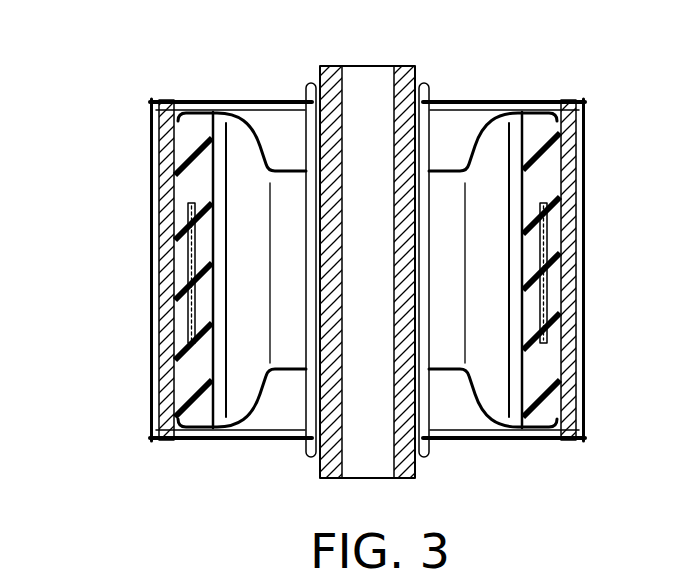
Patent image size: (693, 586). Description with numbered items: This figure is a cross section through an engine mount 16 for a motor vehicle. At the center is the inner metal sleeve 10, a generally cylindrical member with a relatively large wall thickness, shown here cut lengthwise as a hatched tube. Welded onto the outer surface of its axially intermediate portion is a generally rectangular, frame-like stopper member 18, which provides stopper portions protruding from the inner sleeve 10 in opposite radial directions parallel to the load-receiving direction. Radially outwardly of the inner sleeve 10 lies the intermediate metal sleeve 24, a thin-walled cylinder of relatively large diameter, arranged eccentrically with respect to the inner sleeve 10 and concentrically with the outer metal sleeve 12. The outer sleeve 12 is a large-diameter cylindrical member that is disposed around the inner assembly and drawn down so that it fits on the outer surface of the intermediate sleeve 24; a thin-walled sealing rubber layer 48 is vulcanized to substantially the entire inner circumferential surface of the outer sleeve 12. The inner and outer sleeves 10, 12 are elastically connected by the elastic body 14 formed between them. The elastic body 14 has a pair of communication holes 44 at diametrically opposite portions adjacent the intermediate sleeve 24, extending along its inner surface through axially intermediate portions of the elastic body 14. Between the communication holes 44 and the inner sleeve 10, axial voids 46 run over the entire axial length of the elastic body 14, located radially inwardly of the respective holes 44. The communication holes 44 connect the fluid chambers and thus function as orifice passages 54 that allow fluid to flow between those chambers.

The inner metal sleeve 10 is at (416, 428).
The outer metal sleeve 12 is at (588, 126).
The elastic body 14 is at (537, 100).
The engine mount 16 is at (108, 107).
The stopper member 18 is at (304, 293).
The intermediate metal sleeve 24 is at (165, 402).
The communication hole 44 is at (188, 250).
The axial void 46 is at (287, 185).
The sealing rubber layer 48 is at (583, 352).
The orifice passage 54 is at (185, 300).